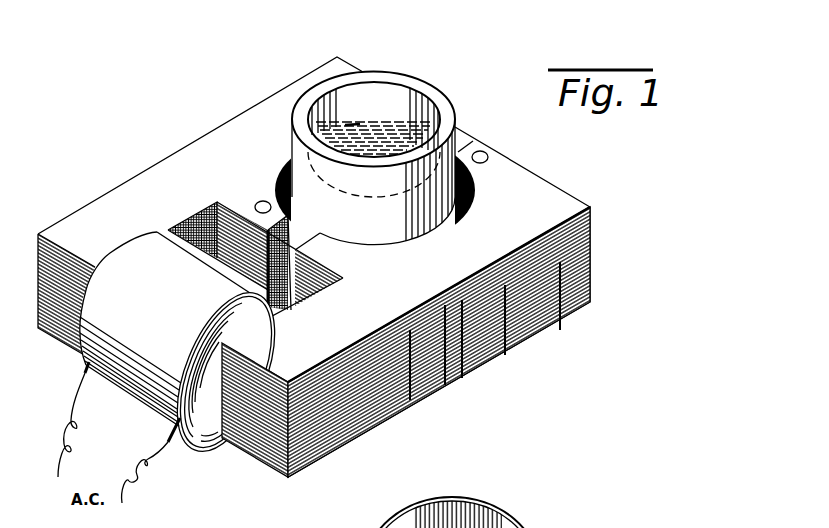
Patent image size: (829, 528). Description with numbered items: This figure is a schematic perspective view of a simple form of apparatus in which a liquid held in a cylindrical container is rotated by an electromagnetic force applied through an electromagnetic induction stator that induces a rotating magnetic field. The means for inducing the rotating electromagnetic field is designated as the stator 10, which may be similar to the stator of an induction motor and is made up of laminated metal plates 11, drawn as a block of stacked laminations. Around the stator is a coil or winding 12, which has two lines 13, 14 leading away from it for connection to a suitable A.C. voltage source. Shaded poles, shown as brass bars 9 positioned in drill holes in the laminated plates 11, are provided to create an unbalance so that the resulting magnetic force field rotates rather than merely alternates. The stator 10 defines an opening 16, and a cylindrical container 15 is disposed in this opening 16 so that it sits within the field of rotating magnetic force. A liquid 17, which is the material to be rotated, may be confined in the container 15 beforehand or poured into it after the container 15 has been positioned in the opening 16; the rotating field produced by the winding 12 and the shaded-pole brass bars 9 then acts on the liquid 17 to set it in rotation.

The brass bars 9 is at (257, 203).
The means for inducing a rotating electromagnetic field 10 is at (460, 387).
The laminated metal plates 11 is at (563, 300).
The coil or winding 12 is at (144, 398).
The line 13 is at (82, 381).
The line 14 is at (171, 442).
The container 15 is at (379, 72).
The opening 16 is at (473, 178).
The liquid 17 is at (398, 127).